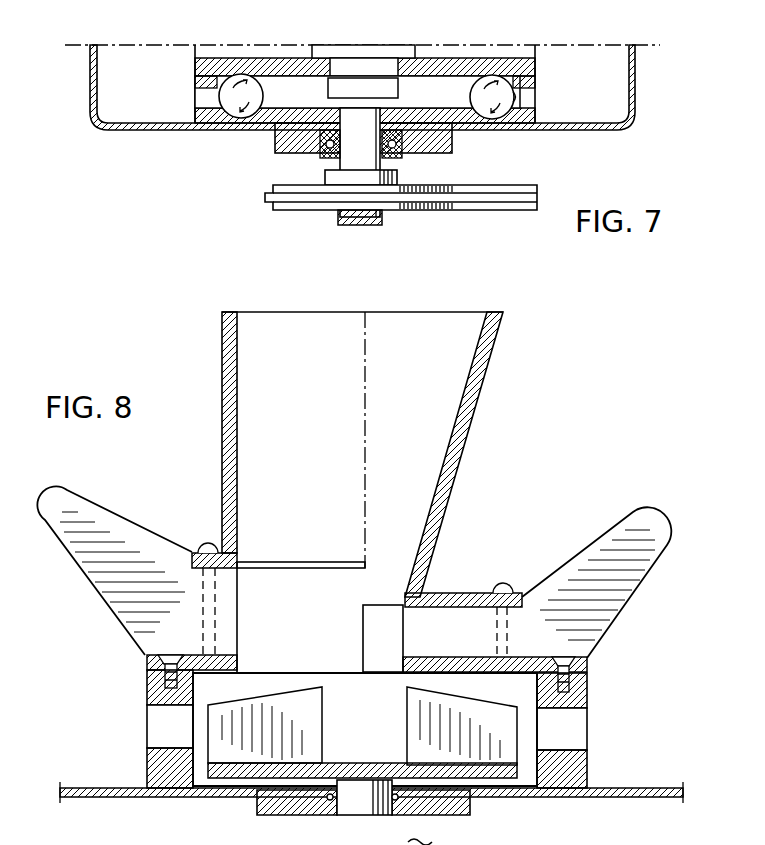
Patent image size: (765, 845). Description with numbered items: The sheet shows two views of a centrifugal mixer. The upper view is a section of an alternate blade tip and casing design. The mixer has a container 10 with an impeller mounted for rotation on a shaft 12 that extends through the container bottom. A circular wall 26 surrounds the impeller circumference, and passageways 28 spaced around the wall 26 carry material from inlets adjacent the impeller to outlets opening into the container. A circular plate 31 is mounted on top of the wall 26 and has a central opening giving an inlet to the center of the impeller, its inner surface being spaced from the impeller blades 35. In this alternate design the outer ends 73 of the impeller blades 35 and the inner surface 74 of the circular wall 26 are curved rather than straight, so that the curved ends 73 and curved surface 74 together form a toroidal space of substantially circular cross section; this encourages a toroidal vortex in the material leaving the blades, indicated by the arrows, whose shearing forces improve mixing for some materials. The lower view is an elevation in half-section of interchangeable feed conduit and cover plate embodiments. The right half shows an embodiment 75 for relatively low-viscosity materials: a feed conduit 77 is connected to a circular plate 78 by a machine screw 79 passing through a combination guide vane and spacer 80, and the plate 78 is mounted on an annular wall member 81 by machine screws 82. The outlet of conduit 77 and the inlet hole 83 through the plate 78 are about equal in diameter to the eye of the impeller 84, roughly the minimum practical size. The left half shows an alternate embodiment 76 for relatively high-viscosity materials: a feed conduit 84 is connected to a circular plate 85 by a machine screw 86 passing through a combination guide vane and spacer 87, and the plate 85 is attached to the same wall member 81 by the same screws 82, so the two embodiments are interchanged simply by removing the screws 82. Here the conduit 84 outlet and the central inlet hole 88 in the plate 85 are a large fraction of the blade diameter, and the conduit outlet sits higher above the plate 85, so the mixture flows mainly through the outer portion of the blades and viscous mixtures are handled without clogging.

In FIG. 7, the container 10 is at (585, 132).
In FIG. 7, the shaft 12 is at (380, 163).
In FIG. 7, the circular wall 26 is at (535, 78).
In FIG. 7, the passageways 28 is at (216, 122).
In FIG. 7, the circular plate 31 is at (232, 58).
In FIG. 7, the impeller blades 35 is at (405, 88).
In FIG. 7, the outer ends of impeller blades 73 is at (366, 96).
In FIG. 7, the inner surface of circular wall 74 is at (518, 97).
In FIG. 8, the embodiment 75 is at (474, 485).
In FIG. 8, the alternate embodiment 76 is at (200, 431).
In FIG. 8, the feed conduit 77 is at (472, 404).
In FIG. 8, the circular plate 78 is at (580, 663).
In FIG. 8, the machine screw 79 is at (504, 580).
In FIG. 8, the combination guide vane and spacer 80 is at (632, 580).
In FIG. 8, the annular wall member 81 is at (150, 760).
In FIG. 8, the machine screws 82 is at (560, 658).
In FIG. 8, the inlet hole 83 is at (403, 665).
In FIG. 8, the feed conduit 84 is at (232, 478).
In FIG. 8, the circular plate 85 is at (150, 665).
In FIG. 8, the machine screw 86 is at (208, 545).
In FIG. 8, the combination guide vane and spacer 87 is at (110, 585).
In FIG. 8, the central inlet hole 88 is at (237, 662).